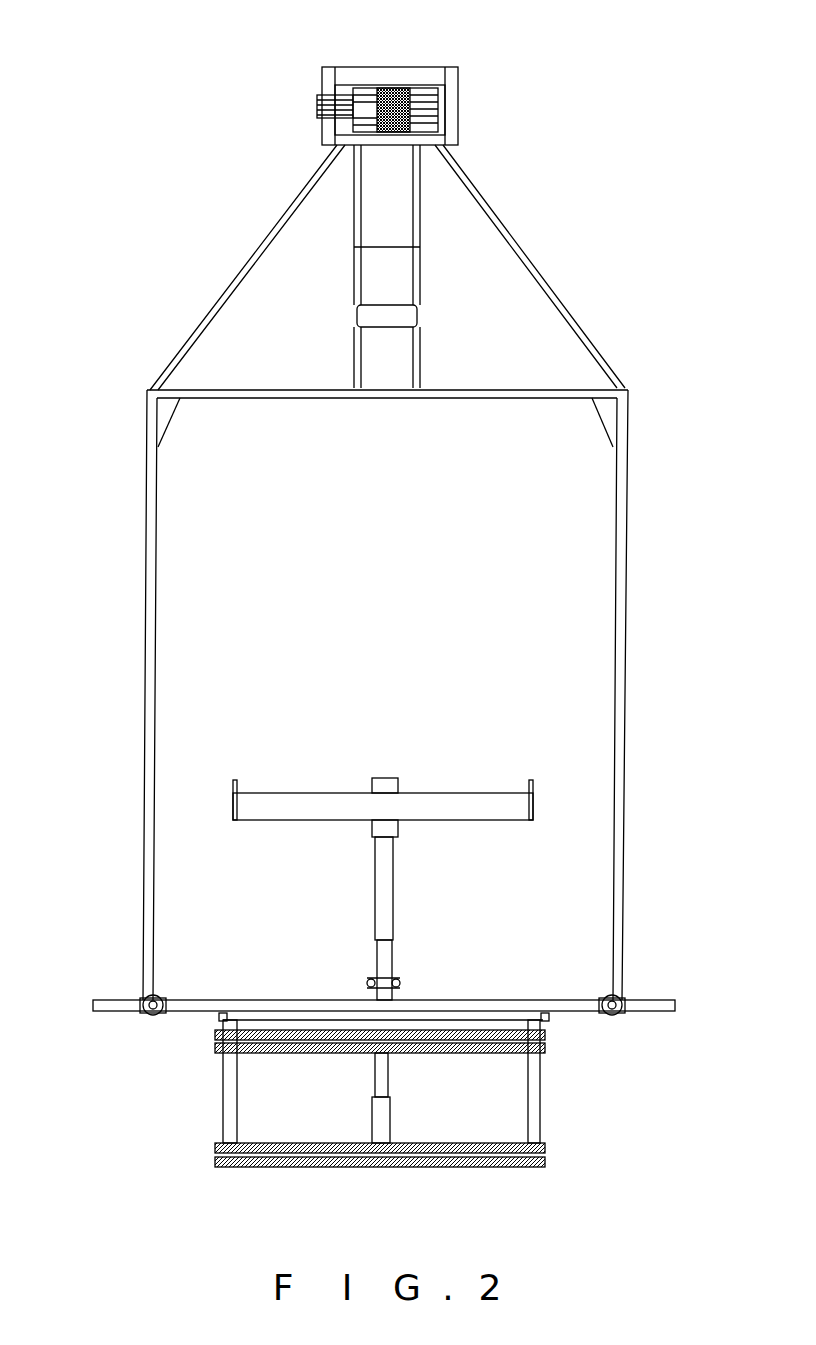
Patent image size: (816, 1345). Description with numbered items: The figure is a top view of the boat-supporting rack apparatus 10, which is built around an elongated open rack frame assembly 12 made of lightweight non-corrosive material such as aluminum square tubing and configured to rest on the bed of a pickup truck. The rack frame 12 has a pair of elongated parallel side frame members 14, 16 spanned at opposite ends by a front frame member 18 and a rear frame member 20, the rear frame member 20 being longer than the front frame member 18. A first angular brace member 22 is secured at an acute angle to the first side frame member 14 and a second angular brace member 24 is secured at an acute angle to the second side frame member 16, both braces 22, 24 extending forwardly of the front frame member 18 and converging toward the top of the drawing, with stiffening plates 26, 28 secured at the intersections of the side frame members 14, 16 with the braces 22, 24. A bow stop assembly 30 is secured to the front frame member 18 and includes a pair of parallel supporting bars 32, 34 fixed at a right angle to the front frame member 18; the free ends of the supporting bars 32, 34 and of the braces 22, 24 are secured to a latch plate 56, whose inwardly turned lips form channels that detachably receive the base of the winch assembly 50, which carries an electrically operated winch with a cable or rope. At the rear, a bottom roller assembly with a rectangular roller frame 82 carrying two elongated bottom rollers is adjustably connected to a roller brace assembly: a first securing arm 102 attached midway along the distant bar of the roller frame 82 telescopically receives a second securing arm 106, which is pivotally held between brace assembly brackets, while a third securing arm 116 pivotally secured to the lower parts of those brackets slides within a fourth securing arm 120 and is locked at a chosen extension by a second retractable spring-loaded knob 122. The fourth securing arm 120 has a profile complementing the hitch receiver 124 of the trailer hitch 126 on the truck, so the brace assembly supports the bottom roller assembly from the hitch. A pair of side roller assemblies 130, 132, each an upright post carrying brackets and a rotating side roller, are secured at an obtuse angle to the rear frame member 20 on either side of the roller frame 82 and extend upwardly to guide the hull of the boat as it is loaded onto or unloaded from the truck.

The boat-supporting rack apparatus 10 is at (683, 68).
The rack frame assembly 12 is at (627, 773).
The first side frame member 14 is at (145, 623).
The second side frame member 16 is at (625, 660).
The front frame member 18 is at (492, 400).
The rear frame member 20 is at (490, 1000).
The first angular brace member 22 is at (252, 262).
The second angular brace member 24 is at (548, 288).
The stiffening plate 26 is at (173, 418).
The stiffening plate 28 is at (598, 404).
The bow stop assembly 30 is at (352, 314).
The supporting bar 32 is at (347, 200).
The supporting bar 34 is at (422, 355).
The winch assembly 50 is at (458, 103).
The latch plate 56 is at (420, 205).
The roller frame 82 is at (222, 1103).
The first securing arm 102 is at (392, 1110).
The second securing arm 106 is at (390, 1078).
The third securing arm 116 is at (393, 952).
The fourth securing arm 120 is at (393, 893).
The second retractable spring-loaded knob 122 is at (370, 920).
The hitch receiver 124 is at (398, 823).
The trailer hitch 126 is at (478, 792).
The side roller assembly 130 is at (150, 1015).
The side roller assembly 132 is at (622, 1015).